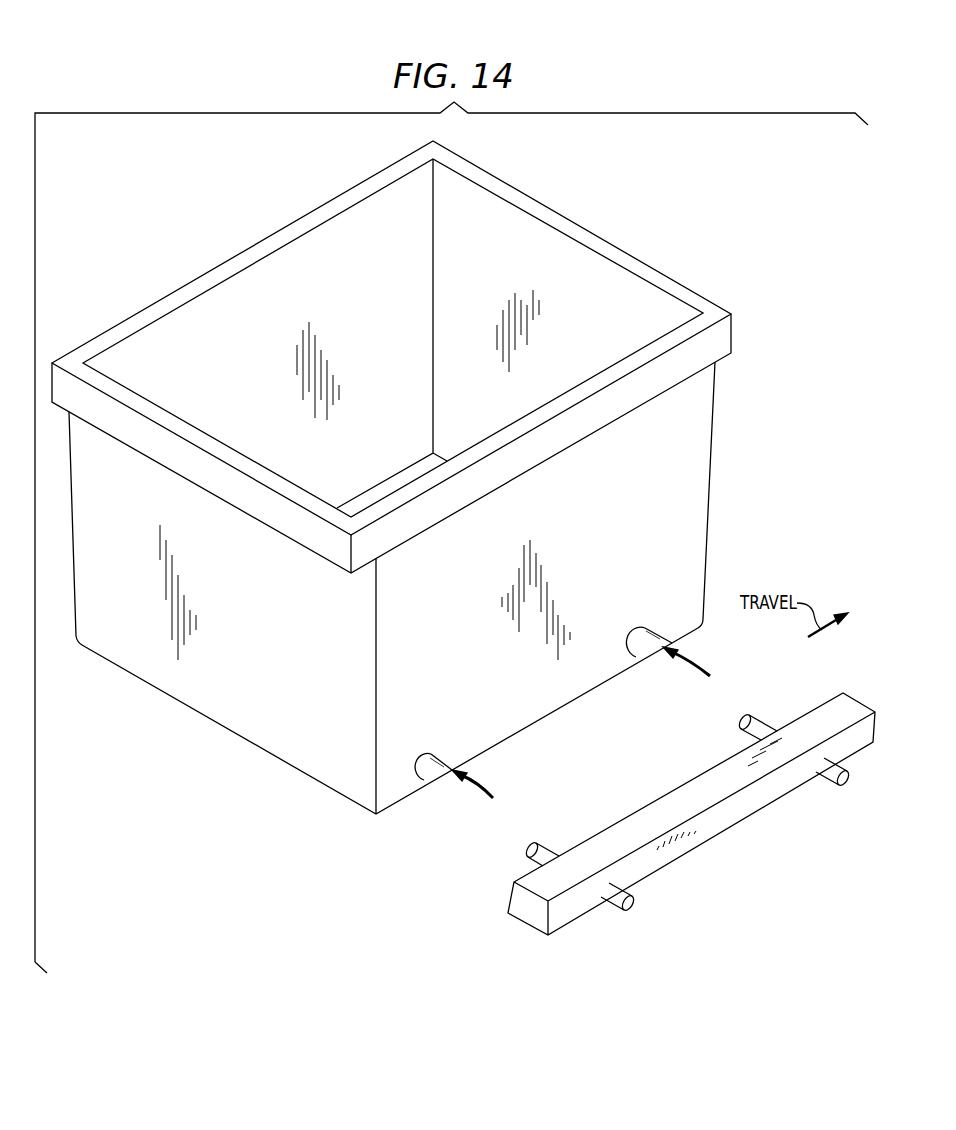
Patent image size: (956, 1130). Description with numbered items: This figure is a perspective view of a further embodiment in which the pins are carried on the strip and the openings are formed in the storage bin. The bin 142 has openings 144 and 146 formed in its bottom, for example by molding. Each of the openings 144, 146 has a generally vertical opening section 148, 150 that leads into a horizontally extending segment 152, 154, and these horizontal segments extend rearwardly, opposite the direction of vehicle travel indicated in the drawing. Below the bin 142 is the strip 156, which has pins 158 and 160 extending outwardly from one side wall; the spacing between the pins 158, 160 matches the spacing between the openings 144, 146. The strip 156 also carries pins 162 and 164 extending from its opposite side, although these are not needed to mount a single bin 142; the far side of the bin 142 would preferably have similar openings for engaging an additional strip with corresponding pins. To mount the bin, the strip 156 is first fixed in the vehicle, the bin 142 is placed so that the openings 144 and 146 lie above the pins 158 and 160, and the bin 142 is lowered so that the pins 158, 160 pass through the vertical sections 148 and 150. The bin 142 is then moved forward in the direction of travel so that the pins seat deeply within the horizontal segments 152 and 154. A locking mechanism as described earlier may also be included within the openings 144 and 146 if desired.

The bin 142 is at (713, 481).
The opening 144 is at (701, 667).
The opening 146 is at (445, 779).
The vertical opening section 148 is at (656, 655).
The vertical opening section 150 is at (489, 791).
The horizontally extending segment 152 is at (640, 630).
The horizontally extending segment 154 is at (428, 752).
The strip 156 is at (718, 823).
The pin 158 is at (765, 724).
The pin 160 is at (559, 851).
The pin 162 is at (830, 786).
The pin 164 is at (614, 912).